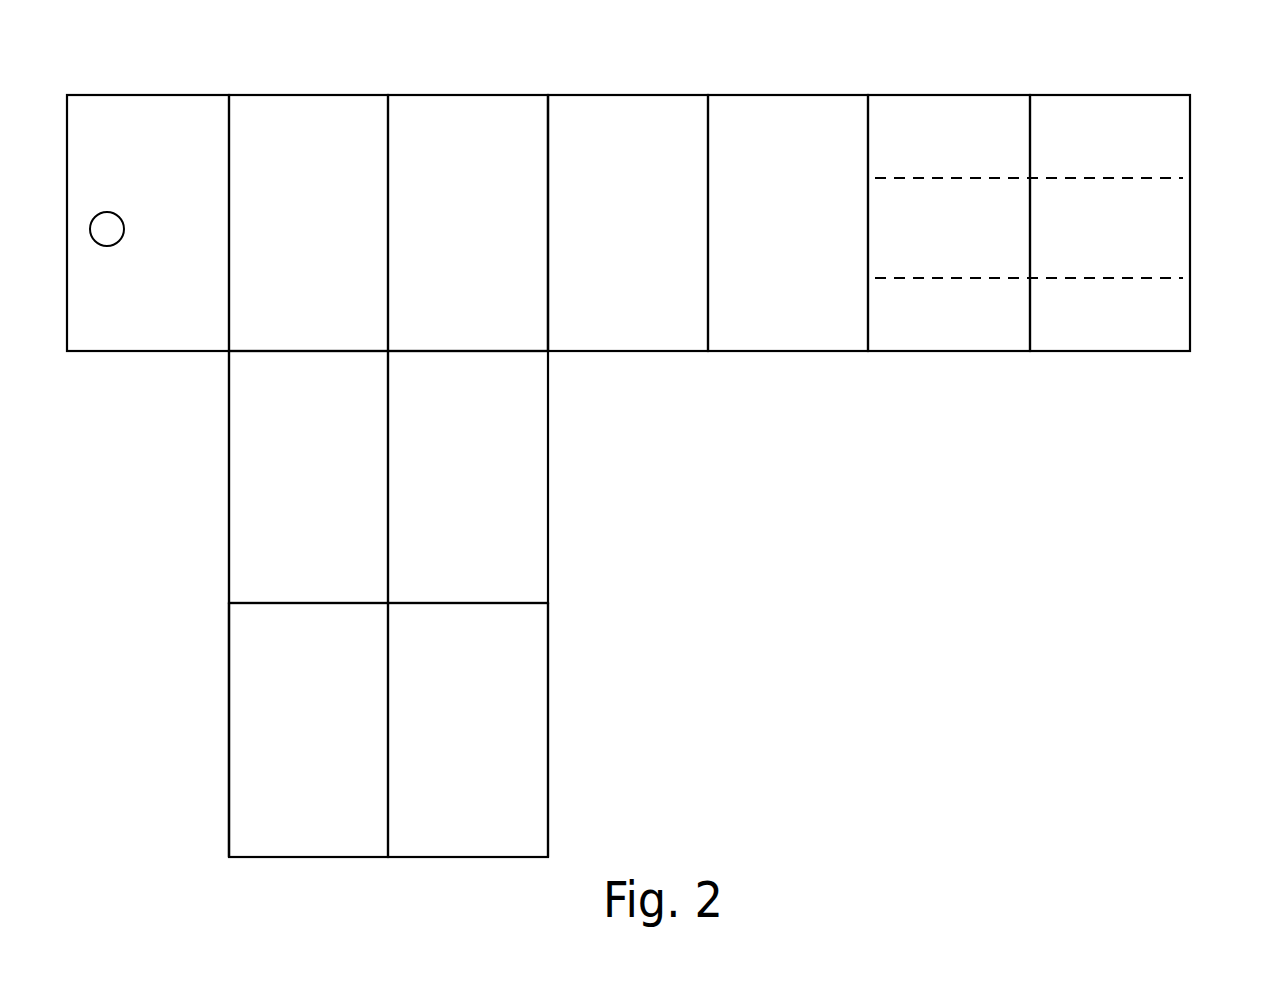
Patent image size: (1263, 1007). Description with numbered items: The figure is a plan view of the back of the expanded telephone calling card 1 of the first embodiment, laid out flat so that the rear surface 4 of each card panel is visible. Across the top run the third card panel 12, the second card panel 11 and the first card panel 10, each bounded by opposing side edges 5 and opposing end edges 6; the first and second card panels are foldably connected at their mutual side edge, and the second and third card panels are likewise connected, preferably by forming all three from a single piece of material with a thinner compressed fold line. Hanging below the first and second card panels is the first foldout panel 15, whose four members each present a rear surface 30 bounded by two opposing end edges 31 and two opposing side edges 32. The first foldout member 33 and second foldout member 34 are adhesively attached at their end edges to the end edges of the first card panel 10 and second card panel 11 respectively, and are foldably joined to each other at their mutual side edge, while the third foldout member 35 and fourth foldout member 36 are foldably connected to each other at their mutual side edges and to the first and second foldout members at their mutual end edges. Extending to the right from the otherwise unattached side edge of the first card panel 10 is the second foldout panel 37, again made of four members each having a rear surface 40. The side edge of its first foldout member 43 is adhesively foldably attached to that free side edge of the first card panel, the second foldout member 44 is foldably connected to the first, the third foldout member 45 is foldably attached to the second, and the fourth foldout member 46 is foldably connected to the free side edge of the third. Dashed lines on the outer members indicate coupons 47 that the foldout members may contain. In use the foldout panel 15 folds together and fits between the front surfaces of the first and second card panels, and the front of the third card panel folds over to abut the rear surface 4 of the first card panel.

The telephone calling card 1 is at (699, 426).
The rear surface 4 is at (165, 312).
The side edge 5 is at (547, 138).
The end edge 6 is at (406, 94).
The first card panel 10 is at (485, 245).
The second card panel 11 is at (336, 247).
The third card panel 12 is at (190, 247).
The foldout panel 15 is at (932, 376).
The rear surface 30 is at (275, 541).
The end edge 31 is at (291, 605).
The side edge 32 is at (229, 742).
The first foldout member 33 is at (493, 509).
The second foldout member 34 is at (328, 509).
The third foldout member 35 is at (498, 748).
The fourth foldout member 36 is at (326, 748).
The second foldout panel 37 is at (1114, 357).
The rear surface 40 is at (640, 293).
The first foldout member 43 is at (651, 247).
The second foldout member 44 is at (809, 245).
The third foldout member 45 is at (967, 247).
The fourth foldout member 46 is at (1129, 247).
The coupon 47 is at (1148, 135).